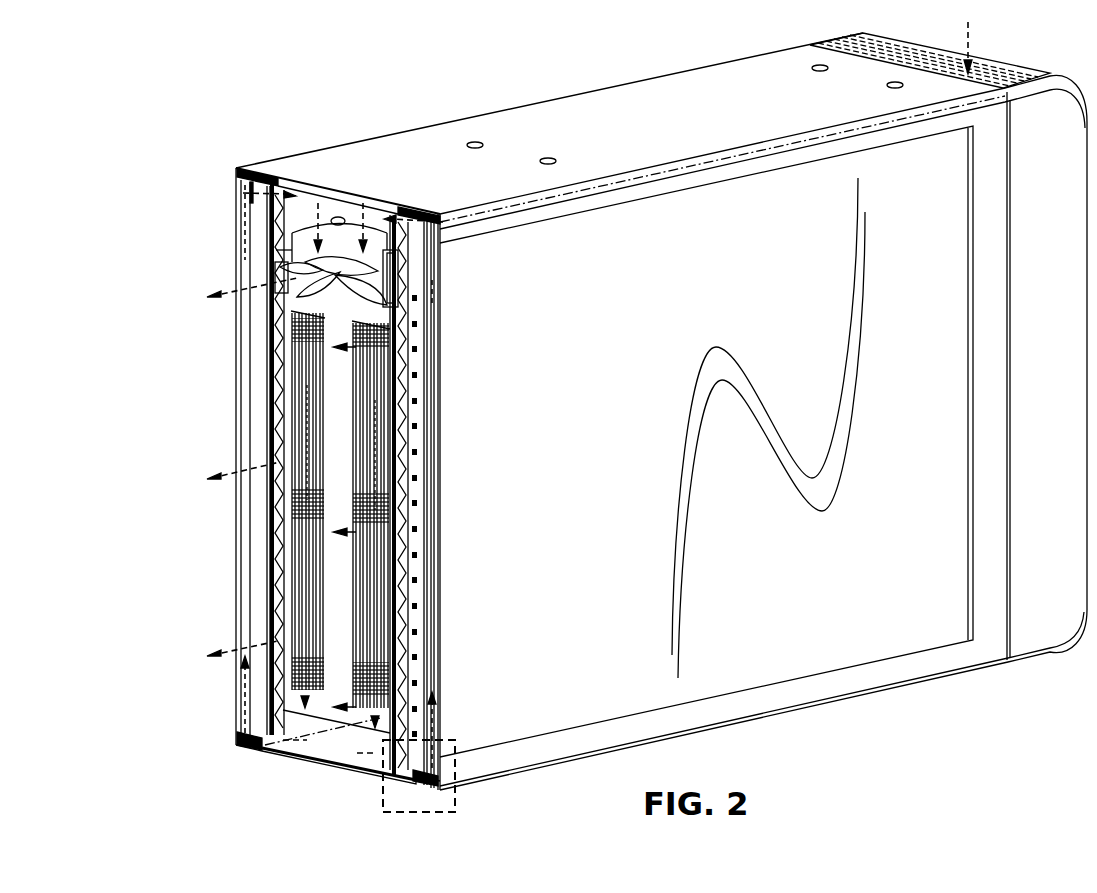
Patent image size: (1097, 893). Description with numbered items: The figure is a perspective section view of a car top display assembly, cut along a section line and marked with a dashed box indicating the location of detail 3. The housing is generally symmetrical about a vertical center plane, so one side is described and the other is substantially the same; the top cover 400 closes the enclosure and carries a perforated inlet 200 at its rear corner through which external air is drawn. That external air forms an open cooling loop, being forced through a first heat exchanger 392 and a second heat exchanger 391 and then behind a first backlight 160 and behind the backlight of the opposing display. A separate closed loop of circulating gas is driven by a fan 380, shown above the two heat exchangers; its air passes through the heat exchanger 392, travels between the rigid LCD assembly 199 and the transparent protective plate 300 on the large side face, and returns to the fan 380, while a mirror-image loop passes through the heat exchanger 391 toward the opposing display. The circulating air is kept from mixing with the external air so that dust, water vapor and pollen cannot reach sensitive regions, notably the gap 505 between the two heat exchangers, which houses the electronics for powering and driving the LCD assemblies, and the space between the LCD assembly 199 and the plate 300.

The top cover 400 is at (558, 126).
The inlet 200 is at (982, 73).
The transparent protective plate 300 is at (823, 657).
The fan 380 is at (300, 258).
The first backlight 160 is at (417, 337).
The gap 505 is at (338, 568).
The second heat exchanger 391 is at (318, 676).
The first heat exchanger 392 is at (367, 690).
The rigid LCD assembly 199 is at (433, 725).
The detail 3 is at (455, 797).